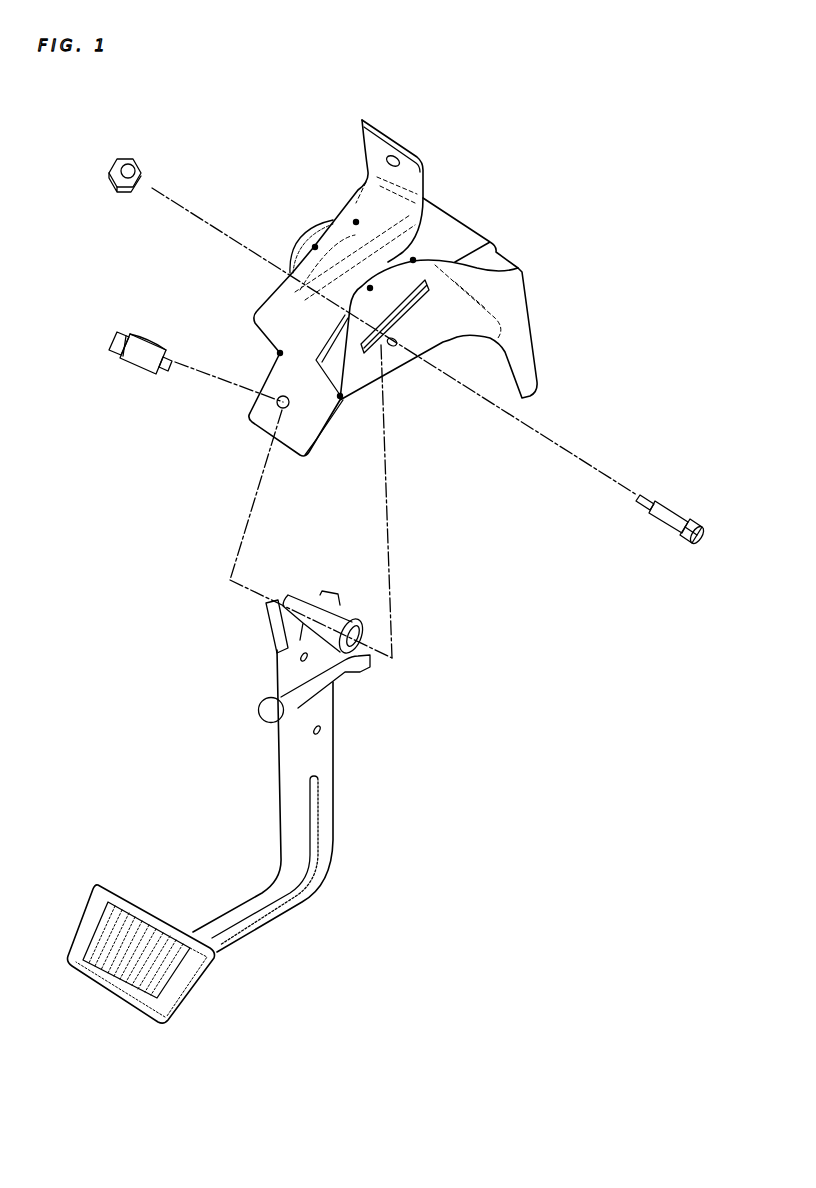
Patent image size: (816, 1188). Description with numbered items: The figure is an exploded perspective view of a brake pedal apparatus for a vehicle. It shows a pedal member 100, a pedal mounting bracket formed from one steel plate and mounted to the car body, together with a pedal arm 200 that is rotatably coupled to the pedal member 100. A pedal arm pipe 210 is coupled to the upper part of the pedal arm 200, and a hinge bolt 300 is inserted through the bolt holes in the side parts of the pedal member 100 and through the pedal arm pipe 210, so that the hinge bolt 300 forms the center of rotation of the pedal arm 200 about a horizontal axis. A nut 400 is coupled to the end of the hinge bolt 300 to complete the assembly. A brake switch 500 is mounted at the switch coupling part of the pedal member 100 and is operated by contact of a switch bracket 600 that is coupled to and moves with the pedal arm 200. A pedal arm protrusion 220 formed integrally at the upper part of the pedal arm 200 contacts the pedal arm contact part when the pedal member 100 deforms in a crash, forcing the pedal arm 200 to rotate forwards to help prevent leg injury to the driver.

The pedal member 100 is at (481, 216).
The pedal arm 200 is at (335, 818).
The pedal arm pipe 210 is at (307, 606).
The pedal arm protrusion 220 is at (268, 628).
The hinge bolt 300 is at (677, 520).
The nut 400 is at (130, 152).
The brake switch 500 is at (143, 335).
The switch bracket 600 is at (322, 694).